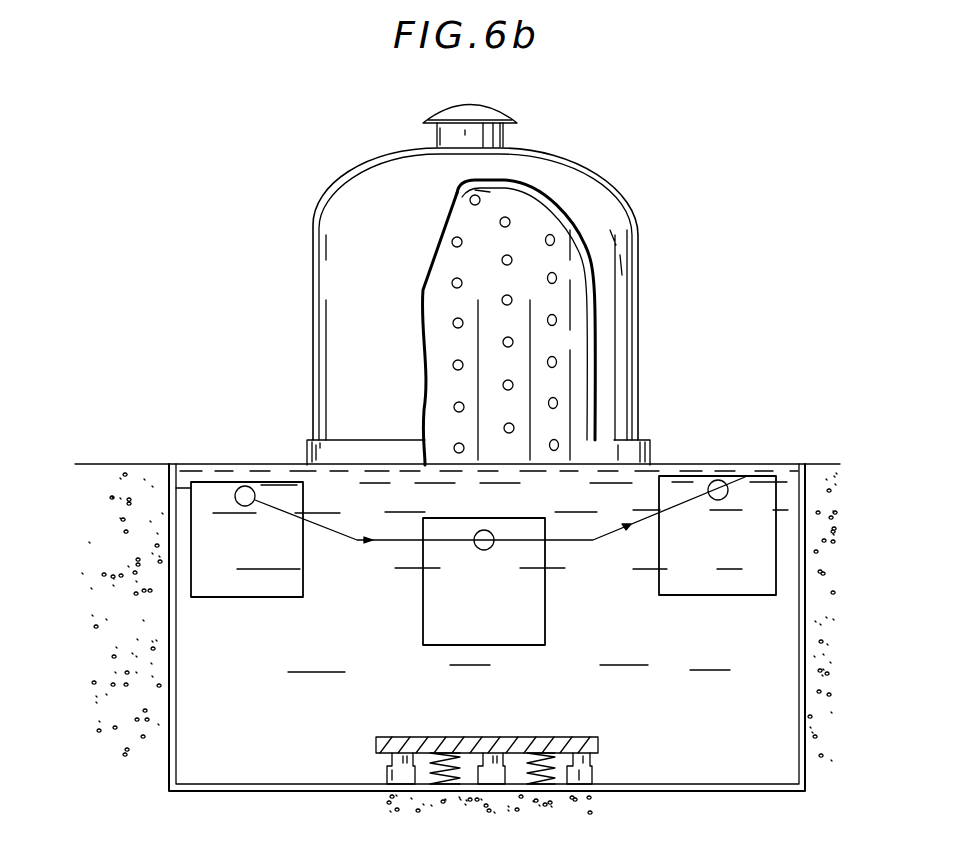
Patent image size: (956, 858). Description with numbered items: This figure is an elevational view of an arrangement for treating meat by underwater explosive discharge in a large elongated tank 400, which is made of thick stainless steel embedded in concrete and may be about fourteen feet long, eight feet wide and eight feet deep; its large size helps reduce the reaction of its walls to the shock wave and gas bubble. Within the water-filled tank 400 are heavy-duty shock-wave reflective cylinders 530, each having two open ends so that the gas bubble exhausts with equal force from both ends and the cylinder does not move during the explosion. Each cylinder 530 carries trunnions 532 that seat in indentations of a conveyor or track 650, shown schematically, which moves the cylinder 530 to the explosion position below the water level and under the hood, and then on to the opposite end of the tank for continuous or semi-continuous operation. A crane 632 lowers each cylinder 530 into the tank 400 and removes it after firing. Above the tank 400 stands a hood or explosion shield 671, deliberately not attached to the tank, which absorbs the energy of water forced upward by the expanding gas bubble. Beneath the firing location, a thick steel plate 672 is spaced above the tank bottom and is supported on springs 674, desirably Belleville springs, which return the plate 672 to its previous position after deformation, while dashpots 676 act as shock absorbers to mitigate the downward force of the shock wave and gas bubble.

The elongated tank 400 is at (169, 720).
The hood or explosion shield 671 is at (612, 192).
The cylinder 530 is at (195, 482).
The trunnions 532 is at (240, 487).
The crane 632 is at (255, 444).
The conveyor or track 650 is at (357, 540).
The dashpots 676 is at (593, 768).
The steel plate 672 is at (417, 760).
The springs 674 is at (557, 775).